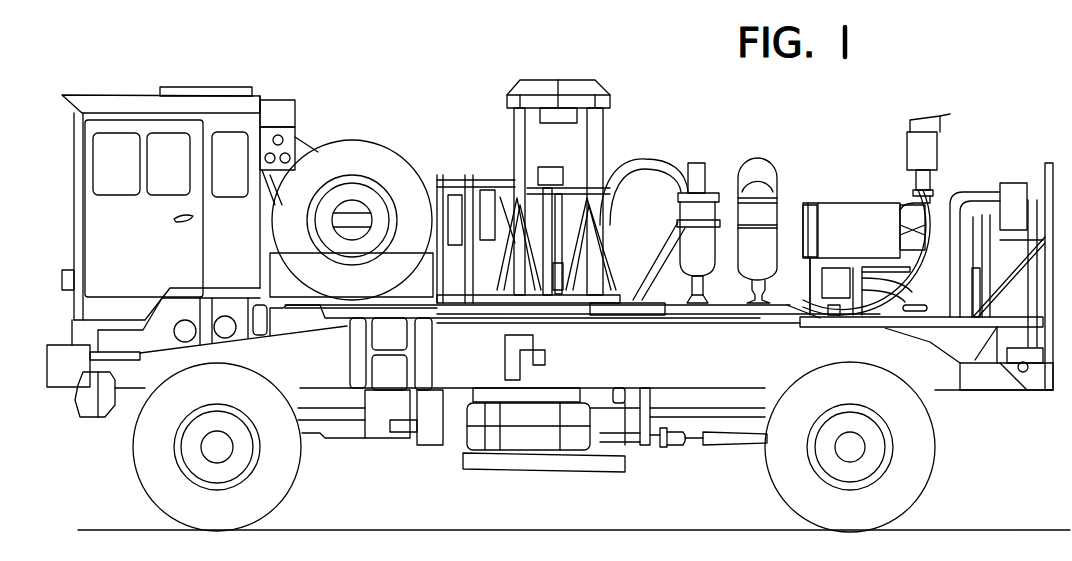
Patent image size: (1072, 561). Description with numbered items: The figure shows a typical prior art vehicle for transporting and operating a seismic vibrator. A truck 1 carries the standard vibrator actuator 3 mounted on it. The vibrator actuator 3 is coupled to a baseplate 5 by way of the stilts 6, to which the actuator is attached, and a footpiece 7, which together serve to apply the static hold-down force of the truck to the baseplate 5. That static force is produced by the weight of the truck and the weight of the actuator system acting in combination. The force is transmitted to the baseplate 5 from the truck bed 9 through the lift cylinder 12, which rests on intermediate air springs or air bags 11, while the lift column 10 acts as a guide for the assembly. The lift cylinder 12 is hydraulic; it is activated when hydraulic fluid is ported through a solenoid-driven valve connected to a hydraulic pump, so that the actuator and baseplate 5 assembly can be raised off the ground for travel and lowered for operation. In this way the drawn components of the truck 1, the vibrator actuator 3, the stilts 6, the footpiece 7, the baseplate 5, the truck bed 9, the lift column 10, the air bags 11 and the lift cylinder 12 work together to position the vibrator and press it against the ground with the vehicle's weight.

The truck 1 is at (553, 76).
The vibrator actuator 3 is at (578, 143).
The baseplate 5 is at (605, 467).
The stilts 6 is at (518, 145).
The footpiece 7 is at (543, 397).
The truck bed 9 is at (932, 377).
The lift column 10 is at (628, 157).
The air springs or air bags 11 is at (465, 400).
The lift cylinder 12 is at (512, 198).